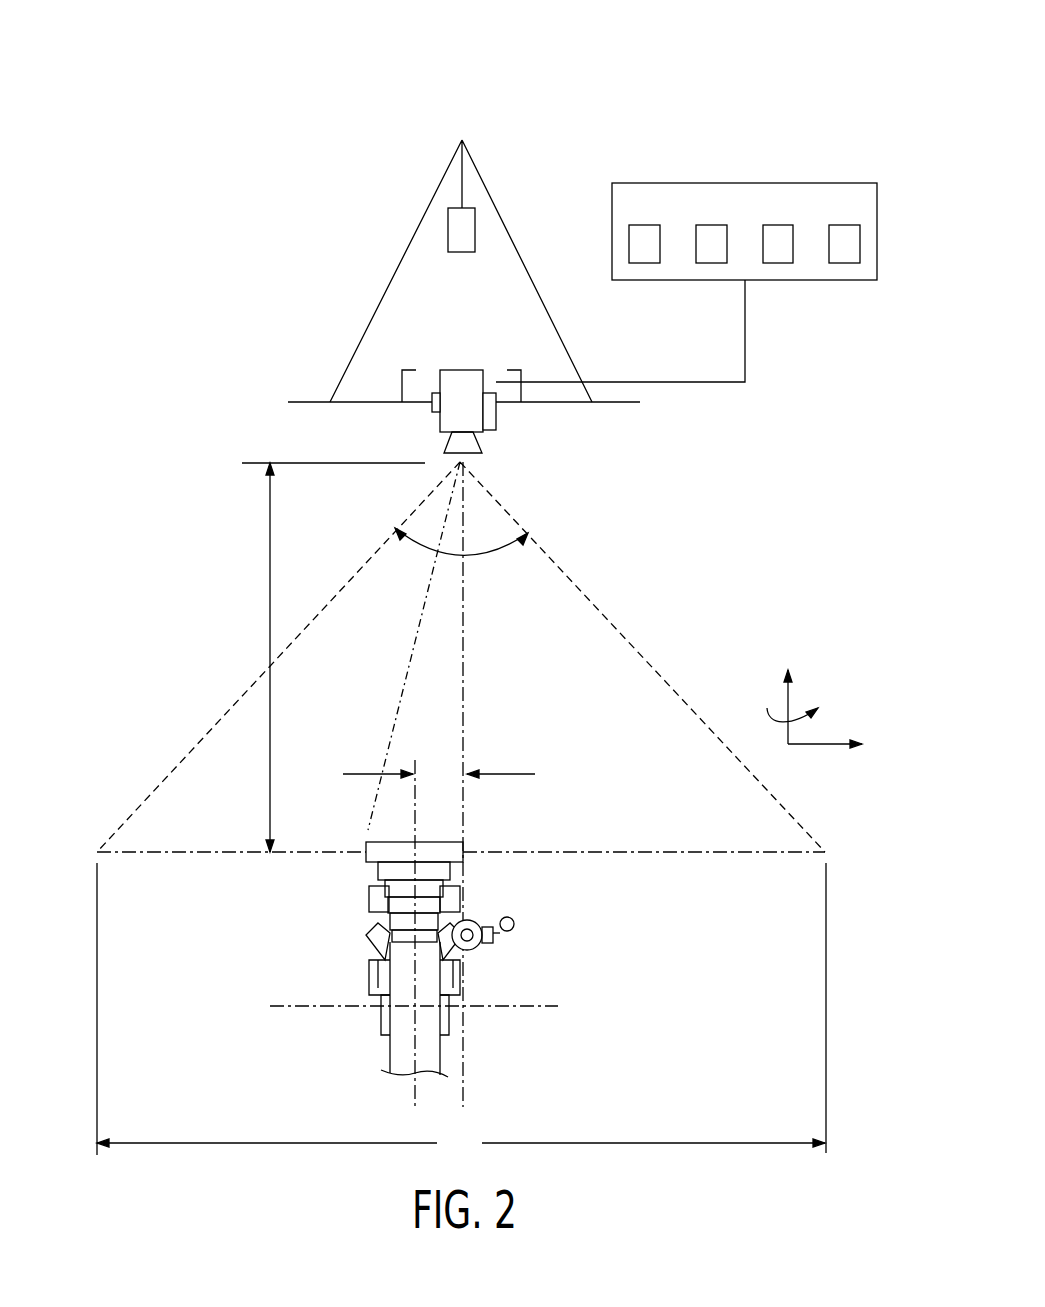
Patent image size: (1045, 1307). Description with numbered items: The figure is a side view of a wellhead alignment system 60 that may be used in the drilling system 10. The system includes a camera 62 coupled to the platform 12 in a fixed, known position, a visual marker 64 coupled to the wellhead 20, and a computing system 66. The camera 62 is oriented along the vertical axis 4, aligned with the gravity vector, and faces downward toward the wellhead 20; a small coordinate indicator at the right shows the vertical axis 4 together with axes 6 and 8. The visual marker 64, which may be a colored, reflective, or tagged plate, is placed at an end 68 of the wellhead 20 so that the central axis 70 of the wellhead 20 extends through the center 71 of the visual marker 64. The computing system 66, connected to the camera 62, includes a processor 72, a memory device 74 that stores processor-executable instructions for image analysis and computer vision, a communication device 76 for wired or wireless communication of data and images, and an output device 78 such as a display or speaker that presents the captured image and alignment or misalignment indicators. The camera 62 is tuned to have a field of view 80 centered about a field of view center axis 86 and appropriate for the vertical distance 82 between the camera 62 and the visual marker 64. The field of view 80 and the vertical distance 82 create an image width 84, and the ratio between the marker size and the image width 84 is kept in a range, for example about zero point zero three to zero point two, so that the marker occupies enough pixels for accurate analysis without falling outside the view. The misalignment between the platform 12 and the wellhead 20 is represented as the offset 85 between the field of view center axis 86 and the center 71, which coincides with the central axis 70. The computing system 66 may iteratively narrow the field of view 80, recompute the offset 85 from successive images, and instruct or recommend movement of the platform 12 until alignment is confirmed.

The drilling system 10 is at (548, 57).
The platform 12 is at (490, 163).
The wellhead alignment system 60 is at (712, 143).
The computing system 66 is at (745, 183).
The processor 72 is at (629, 243).
The memory device 74 is at (696, 242).
The communication device 76 is at (793, 243).
The output device 78 is at (845, 263).
The camera 62 is at (462, 368).
The vertical distance 82 is at (333, 657).
The field of view 80 is at (490, 555).
The field of view center axis 86 is at (465, 738).
The offset 85 is at (503, 774).
The central axis 70 is at (413, 800).
The center 71 is at (413, 842).
The visual marker 64 is at (433, 842).
The end 68 is at (385, 872).
The wellhead 20 is at (385, 903).
The vertical axis 4 is at (788, 698).
The horizontal axis 6 is at (818, 744).
The rotational axis direction 8 is at (767, 708).
The image width 84 is at (461, 810).